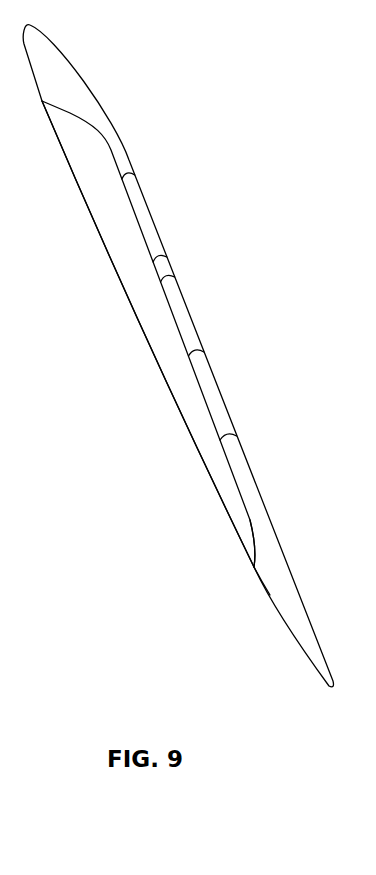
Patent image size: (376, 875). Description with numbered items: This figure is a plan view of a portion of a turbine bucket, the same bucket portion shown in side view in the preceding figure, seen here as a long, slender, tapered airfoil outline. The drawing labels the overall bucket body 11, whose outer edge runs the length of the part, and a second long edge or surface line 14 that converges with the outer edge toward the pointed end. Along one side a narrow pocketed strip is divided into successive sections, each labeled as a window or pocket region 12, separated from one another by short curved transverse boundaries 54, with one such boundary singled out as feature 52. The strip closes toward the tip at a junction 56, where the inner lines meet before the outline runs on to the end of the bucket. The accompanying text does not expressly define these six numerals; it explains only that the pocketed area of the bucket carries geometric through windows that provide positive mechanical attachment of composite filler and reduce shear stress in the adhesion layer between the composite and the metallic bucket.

The blade 11 is at (148, 308).
The segment 12 is at (143, 208).
The blade body 14 is at (108, 232).
The joint 52 is at (158, 260).
The segment end 54 is at (162, 240).
The distal junction 56 is at (252, 567).